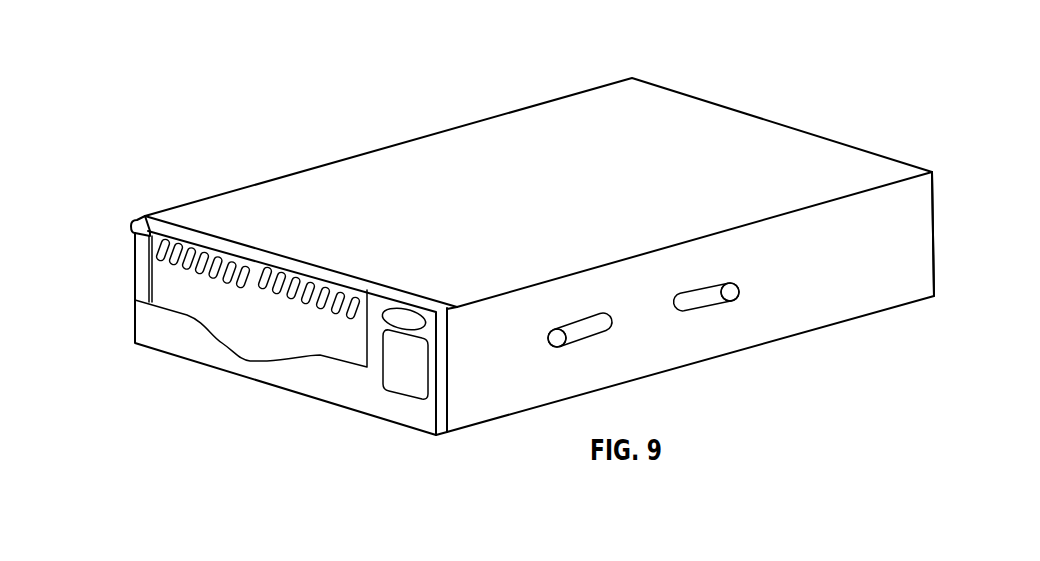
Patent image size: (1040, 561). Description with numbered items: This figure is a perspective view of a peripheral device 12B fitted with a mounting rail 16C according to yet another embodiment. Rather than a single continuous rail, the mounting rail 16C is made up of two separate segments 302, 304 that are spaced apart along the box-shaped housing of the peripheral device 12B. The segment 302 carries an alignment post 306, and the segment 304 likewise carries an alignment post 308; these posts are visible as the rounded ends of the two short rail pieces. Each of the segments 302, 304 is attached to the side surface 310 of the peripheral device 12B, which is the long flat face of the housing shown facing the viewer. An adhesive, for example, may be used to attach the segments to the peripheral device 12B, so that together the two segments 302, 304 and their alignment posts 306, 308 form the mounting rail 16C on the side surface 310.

The peripheral device 12B is at (532, 247).
The mounting rail 16C is at (645, 288).
The segment 302 is at (577, 318).
The segment 304 is at (712, 285).
The alignment post 306 is at (557, 347).
The alignment post 308 is at (735, 299).
The side surface 310 is at (928, 243).